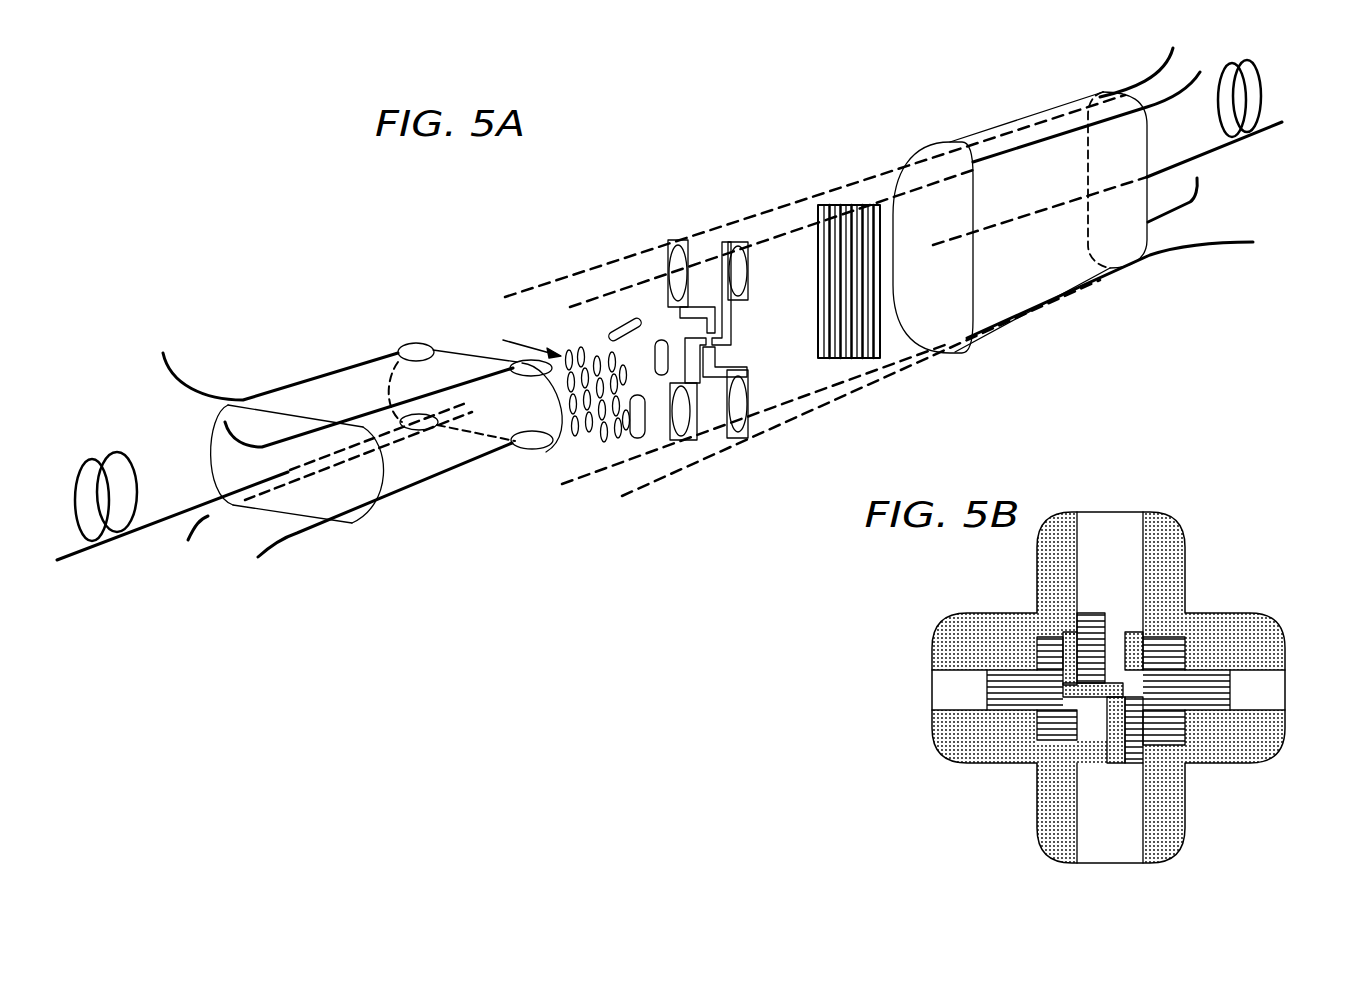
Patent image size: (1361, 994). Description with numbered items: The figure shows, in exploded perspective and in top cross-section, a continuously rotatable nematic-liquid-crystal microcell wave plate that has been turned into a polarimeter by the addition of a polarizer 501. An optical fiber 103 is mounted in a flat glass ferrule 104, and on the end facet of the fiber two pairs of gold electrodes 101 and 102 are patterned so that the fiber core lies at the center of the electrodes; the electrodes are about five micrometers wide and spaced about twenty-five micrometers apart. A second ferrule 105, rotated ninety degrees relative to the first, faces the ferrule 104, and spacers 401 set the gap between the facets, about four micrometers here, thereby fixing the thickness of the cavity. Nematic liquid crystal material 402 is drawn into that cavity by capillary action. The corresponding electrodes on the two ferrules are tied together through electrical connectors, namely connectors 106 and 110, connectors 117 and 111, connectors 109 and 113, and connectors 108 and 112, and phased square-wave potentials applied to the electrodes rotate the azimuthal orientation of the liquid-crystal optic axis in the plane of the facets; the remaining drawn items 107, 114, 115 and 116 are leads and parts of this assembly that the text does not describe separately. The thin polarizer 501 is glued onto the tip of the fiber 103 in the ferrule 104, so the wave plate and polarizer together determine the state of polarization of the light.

In FIG. 5A, the electrode 101 is at (732, 326).
In FIG. 5B, the electrode 101 is at (1108, 768).
In FIG. 5A, the electrode 102 is at (706, 317).
In FIG. 5A, the optical fiber 103 is at (70, 557).
In FIG. 5A, the ferrule 104 is at (1043, 290).
In FIG. 5B, the ferrule 104 is at (1108, 512).
In FIG. 5A, the ferrule 105 is at (428, 497).
In FIG. 5A, the electrical connector 106 is at (178, 368).
In FIG. 5A, the electrode wire 107 is at (232, 441).
In FIG. 5A, the electrical connector 108 is at (287, 543).
In FIG. 5A, the electrical connector 109 is at (212, 515).
In FIG. 5A, the electrical connector 110 is at (1148, 82).
In FIG. 5A, the electrical connector 111 is at (1165, 97).
In FIG. 5A, the electrical connector 112 is at (1197, 245).
In FIG. 5A, the electrical connector 113 is at (1200, 182).
In FIG. 5A, the lens 114 is at (667, 252).
In FIG. 5A, the lens 115 is at (746, 282).
In FIG. 5A, the lens 116 is at (745, 418).
In FIG. 5A, the electrical connector 117 is at (680, 430).
In FIG. 5A, the spacer 401 is at (630, 436).
In FIG. 5A, the nematic liquid crystal material 402 is at (521, 346).
In FIG. 5A, the polarizer 501 is at (838, 205).
In FIG. 5B, the polarizer 501 is at (987, 688).